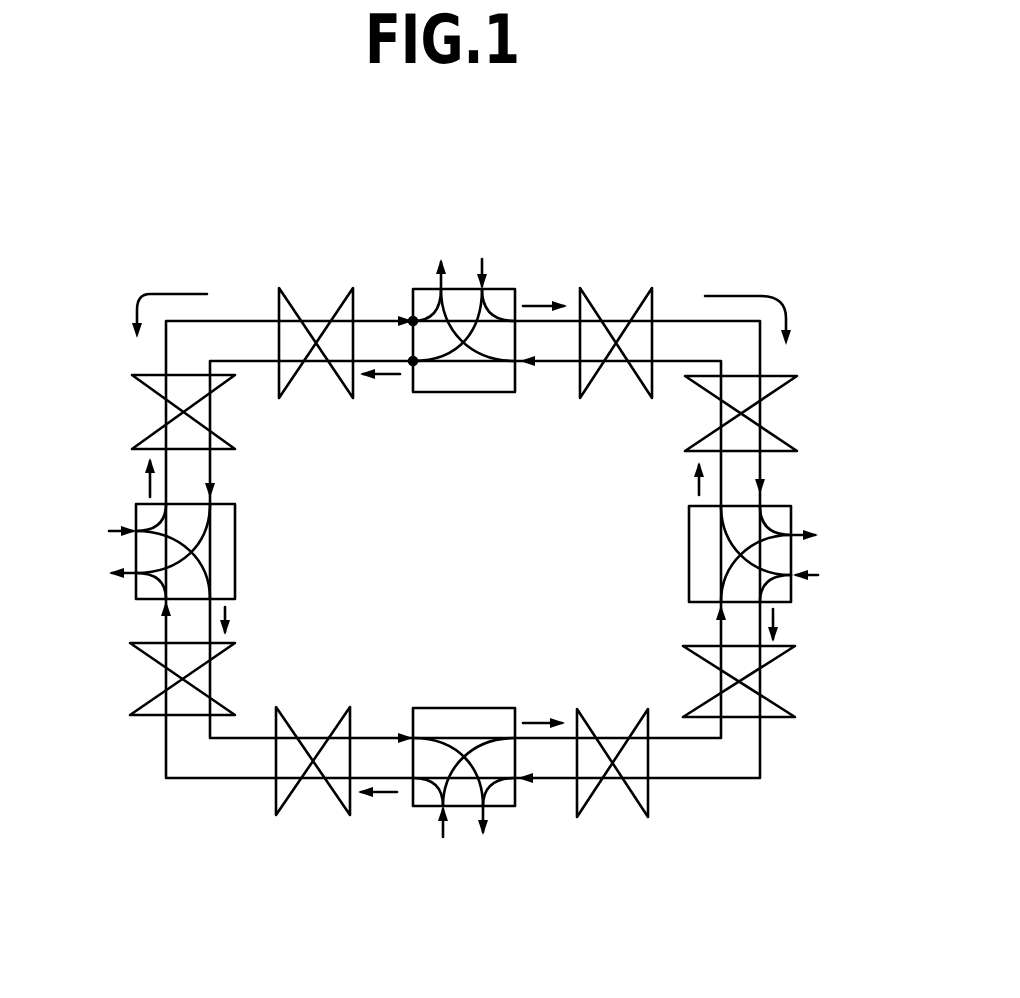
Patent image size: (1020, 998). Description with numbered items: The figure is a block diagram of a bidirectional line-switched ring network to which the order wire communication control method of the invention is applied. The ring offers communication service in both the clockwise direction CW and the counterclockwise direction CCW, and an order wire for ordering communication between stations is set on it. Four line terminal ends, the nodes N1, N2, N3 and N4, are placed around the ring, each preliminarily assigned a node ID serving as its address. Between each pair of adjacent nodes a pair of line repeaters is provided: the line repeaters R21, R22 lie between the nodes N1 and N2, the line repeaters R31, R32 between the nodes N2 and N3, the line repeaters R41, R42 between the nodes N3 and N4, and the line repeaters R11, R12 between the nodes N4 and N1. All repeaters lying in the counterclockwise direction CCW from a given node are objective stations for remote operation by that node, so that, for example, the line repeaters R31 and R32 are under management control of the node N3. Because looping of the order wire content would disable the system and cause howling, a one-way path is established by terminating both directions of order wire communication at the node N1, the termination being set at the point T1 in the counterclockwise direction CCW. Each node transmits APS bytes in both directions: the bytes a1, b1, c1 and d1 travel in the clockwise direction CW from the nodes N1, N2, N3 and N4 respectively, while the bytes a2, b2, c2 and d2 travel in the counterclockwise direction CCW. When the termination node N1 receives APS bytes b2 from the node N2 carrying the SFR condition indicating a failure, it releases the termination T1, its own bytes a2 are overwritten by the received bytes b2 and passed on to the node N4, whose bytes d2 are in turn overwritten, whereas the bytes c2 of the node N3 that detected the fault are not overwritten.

The line repeater R11 is at (278, 290).
The line repeater R12 is at (150, 392).
The line repeater R21 is at (783, 388).
The line repeater R22 is at (640, 287).
The line repeater R31 is at (633, 800).
The line repeater R32 is at (788, 650).
The line repeater R41 is at (140, 705).
The line repeater R42 is at (338, 802).
The node N1 is at (503, 288).
The node N2 is at (791, 518).
The node N3 is at (486, 708).
The node N4 is at (235, 523).
The termination point T1 is at (413, 360).
The APS byte a1 is at (533, 303).
The APS byte a2 is at (391, 378).
The APS byte b1 is at (779, 620).
The APS byte b2 is at (695, 483).
The APS byte c1 is at (387, 795).
The APS byte c2 is at (533, 720).
The APS byte d1 is at (145, 483).
The APS byte d2 is at (228, 612).
The counterclockwise direction CCW is at (143, 293).
The clockwise direction CW is at (765, 296).